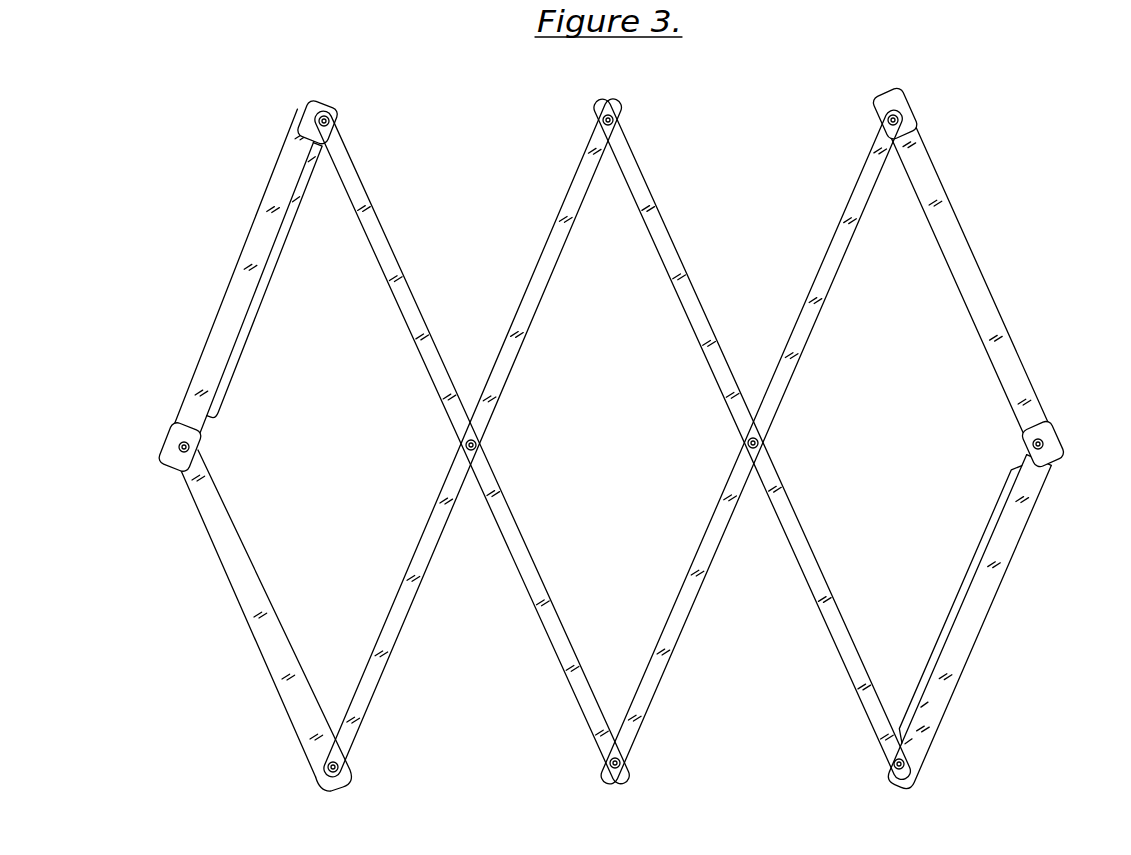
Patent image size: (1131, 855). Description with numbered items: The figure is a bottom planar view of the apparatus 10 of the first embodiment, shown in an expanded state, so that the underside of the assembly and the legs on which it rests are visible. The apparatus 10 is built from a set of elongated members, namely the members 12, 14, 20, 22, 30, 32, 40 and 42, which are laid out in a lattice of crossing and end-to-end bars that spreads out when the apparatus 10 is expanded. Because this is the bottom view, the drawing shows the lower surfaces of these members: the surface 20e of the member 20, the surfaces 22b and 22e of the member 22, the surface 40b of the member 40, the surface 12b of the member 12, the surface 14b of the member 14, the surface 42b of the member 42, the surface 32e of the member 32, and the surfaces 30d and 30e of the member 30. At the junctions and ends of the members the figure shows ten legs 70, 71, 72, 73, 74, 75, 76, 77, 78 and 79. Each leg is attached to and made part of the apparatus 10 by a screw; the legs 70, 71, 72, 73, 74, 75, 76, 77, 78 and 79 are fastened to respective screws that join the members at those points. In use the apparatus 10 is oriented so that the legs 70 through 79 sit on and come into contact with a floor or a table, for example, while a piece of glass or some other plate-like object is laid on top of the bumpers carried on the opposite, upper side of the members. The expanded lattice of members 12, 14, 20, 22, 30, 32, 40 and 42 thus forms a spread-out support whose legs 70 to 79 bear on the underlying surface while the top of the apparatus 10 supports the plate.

The apparatus 10 is at (763, 58).
The member 12 is at (555, 258).
The surface of member 12 12b is at (582, 183).
The member 14 is at (838, 258).
The surface of member 14 14b is at (868, 183).
The member 20 is at (228, 552).
The surface of member 20 20e is at (206, 494).
The member 22 is at (225, 333).
The surface of member 22 22b is at (245, 278).
The surface of member 22 22e is at (277, 242).
The member 30 is at (975, 615).
The surface of member 30 30d is at (1002, 547).
The surface of member 30 30e is at (975, 575).
The member 32 is at (962, 270).
The surface of member 32 32e is at (947, 218).
The member 40 is at (548, 615).
The surface of member 40 40b is at (525, 555).
The member 42 is at (828, 612).
The surface of member 42 42b is at (805, 555).
The leg 70 is at (346, 774).
The leg 71 is at (168, 455).
The leg 72 is at (333, 116).
The leg 73 is at (476, 437).
The leg 74 is at (617, 116).
The leg 75 is at (608, 760).
The leg 76 is at (758, 436).
The leg 77 is at (908, 764).
The leg 78 is at (1043, 430).
The leg 79 is at (885, 114).